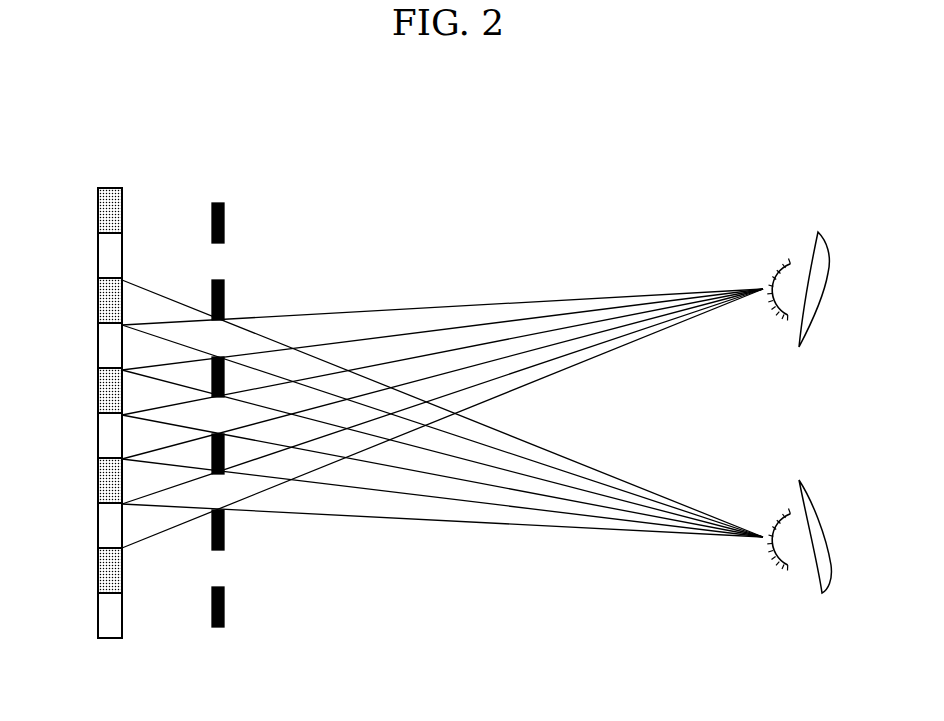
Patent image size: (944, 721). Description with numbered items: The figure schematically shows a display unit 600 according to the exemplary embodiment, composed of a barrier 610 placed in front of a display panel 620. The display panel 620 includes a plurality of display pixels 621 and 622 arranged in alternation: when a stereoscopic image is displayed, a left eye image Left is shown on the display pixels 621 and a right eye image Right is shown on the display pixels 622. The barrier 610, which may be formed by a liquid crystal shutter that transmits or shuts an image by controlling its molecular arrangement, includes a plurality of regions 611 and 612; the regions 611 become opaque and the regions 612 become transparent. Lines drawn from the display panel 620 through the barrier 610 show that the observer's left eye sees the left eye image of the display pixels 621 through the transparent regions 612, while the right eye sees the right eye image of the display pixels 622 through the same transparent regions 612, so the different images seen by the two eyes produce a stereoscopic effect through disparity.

The display unit 600 is at (214, 126).
The display panel 620 is at (113, 186).
The display pixels 621 is at (118, 211).
The display pixels 622 is at (118, 256).
The barrier 610 is at (222, 198).
The regions 611 is at (223, 222).
The regions 612 is at (222, 260).